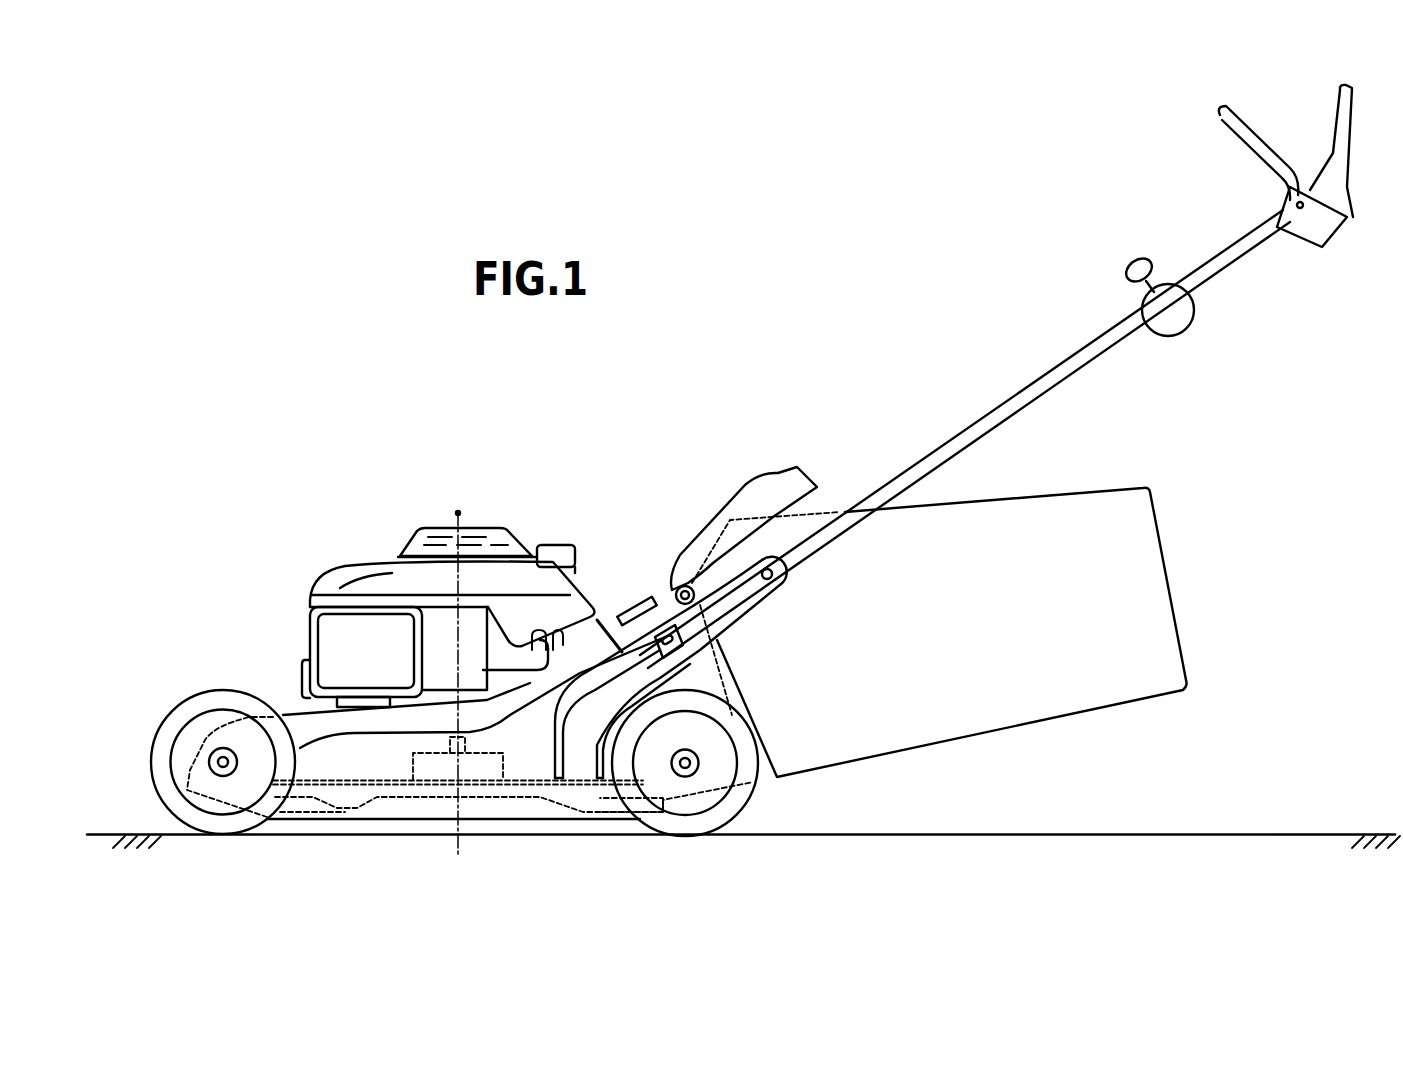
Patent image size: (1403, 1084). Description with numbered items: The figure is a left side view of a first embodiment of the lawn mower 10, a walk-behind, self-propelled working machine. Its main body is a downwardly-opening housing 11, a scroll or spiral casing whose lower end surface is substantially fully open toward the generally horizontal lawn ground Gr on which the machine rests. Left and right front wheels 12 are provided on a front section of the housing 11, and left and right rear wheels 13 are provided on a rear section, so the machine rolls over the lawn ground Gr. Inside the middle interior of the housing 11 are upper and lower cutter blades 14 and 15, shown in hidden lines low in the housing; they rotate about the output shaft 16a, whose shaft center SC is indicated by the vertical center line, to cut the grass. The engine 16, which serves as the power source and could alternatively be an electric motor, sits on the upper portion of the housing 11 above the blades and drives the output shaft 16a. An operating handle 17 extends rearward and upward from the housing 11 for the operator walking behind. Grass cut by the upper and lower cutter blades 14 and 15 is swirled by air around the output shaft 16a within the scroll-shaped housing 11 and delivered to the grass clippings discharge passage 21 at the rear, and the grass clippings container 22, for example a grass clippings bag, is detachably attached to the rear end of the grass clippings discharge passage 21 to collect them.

The lawn mower 10 is at (886, 216).
The housing 11 is at (300, 728).
The front wheel 12 is at (223, 823).
The rear wheel 13 is at (700, 830).
The upper cutter blade 14 is at (340, 788).
The lower cutter blade 15 is at (377, 800).
The engine 16 is at (377, 582).
The output shaft 16a is at (472, 735).
The operating handle 17 is at (1062, 370).
The grass clippings discharge passage 21 is at (708, 678).
The grass clippings container 22 is at (1140, 598).
The shaft center SC is at (462, 520).
The lawn ground Gr is at (1130, 836).